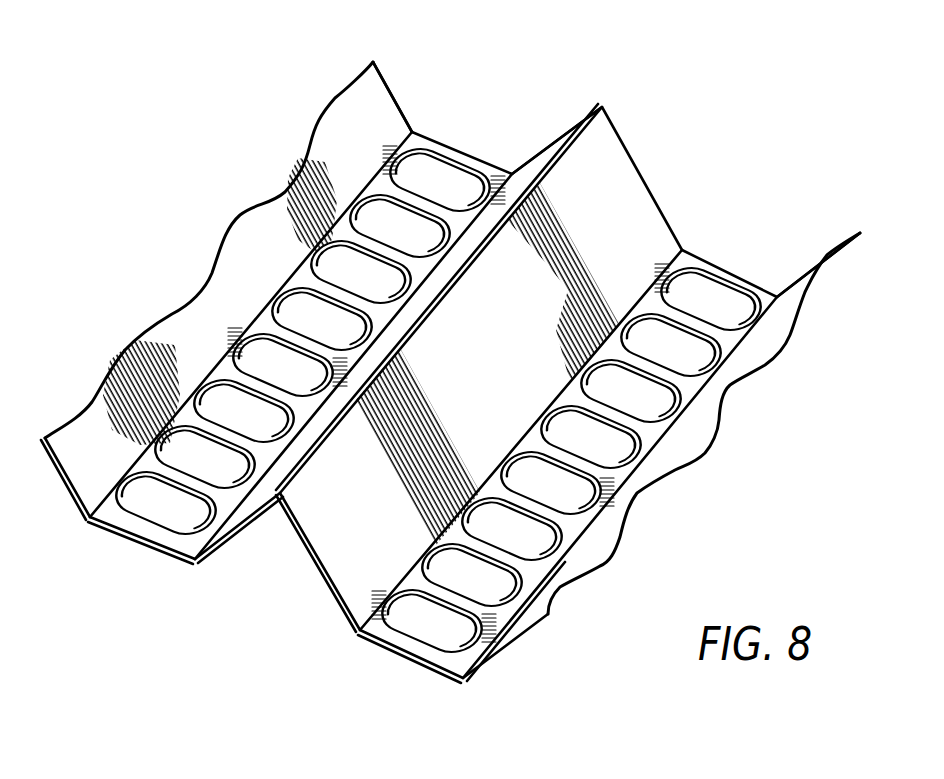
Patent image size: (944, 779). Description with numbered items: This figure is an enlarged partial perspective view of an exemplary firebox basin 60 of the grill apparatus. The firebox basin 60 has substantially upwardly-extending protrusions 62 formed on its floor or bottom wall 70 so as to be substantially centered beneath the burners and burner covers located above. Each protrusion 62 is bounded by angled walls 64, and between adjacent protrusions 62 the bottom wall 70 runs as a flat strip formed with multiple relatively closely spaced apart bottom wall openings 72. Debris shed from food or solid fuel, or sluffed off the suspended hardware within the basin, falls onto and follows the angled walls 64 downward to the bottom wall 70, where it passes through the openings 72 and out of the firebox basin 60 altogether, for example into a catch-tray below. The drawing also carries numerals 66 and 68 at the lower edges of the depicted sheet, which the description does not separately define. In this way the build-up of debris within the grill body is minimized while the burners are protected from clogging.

The firebox basin 60 is at (226, 121).
The protrusions 62 is at (408, 95).
The angled walls 64 is at (342, 127).
The fold vertex / bottom fold 66 is at (280, 498).
The strip end edge 68 is at (97, 507).
The bottom wall 70 is at (302, 278).
The bottom wall openings 72 is at (250, 340).